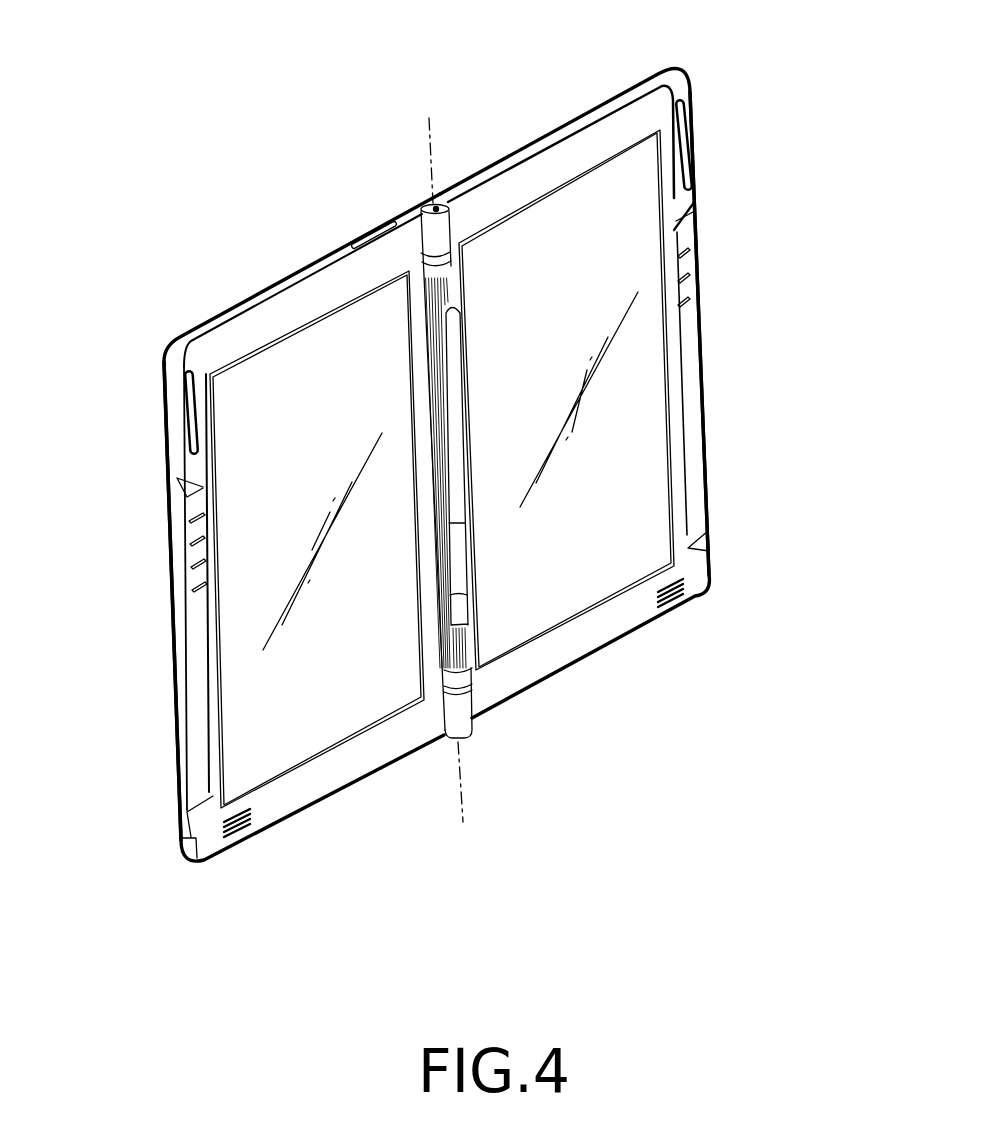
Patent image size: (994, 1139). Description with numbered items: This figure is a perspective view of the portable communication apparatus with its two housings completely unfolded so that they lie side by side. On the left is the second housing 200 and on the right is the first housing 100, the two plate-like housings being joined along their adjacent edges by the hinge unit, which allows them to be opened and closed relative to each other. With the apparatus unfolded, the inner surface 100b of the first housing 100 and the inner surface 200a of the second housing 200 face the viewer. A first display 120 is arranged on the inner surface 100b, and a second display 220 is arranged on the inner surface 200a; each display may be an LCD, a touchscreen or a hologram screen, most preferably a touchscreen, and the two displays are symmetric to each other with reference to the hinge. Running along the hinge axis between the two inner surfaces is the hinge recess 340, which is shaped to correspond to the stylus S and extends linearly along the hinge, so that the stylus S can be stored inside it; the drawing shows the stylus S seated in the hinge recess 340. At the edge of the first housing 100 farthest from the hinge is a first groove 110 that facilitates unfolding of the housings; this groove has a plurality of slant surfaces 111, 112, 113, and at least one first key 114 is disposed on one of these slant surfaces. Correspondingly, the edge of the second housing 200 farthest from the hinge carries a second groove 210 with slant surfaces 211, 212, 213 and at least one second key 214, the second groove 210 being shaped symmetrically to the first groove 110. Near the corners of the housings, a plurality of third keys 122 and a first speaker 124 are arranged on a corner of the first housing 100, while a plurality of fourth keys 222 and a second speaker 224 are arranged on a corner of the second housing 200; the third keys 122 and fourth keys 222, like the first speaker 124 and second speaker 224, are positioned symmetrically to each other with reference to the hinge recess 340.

The first housing 100 is at (611, 653).
The inner surface of the first housing 100b is at (553, 163).
The first groove 110 is at (706, 469).
The slant surface 111 is at (693, 217).
The slant surface 112 is at (685, 333).
The slant surface 113 is at (702, 543).
The first key 114 is at (683, 273).
The first display 120 is at (643, 410).
The third keys 122 is at (684, 122).
The first speaker 124 is at (672, 604).
The second housing 200 is at (299, 818).
The inner surface of the second housing 200a is at (290, 307).
The second groove 210 is at (174, 647).
The slant surface 211 is at (183, 488).
The slant surface 212 is at (192, 705).
The slant surface 213 is at (195, 812).
The second key 214 is at (201, 563).
The second display 220 is at (357, 723).
The fourth keys 222 is at (183, 393).
The second speaker 224 is at (235, 833).
The hinge recess 340 is at (458, 648).
The stylus S is at (450, 337).